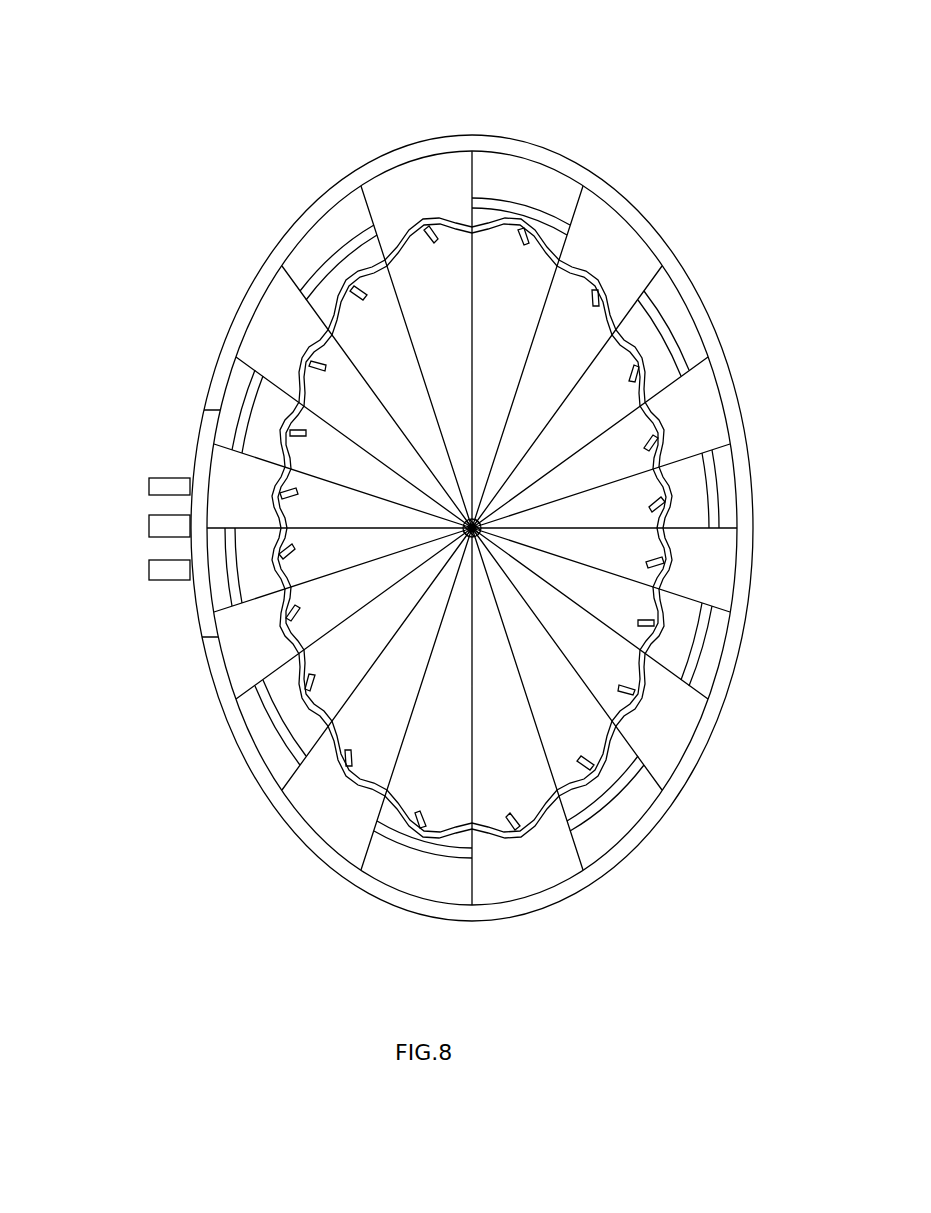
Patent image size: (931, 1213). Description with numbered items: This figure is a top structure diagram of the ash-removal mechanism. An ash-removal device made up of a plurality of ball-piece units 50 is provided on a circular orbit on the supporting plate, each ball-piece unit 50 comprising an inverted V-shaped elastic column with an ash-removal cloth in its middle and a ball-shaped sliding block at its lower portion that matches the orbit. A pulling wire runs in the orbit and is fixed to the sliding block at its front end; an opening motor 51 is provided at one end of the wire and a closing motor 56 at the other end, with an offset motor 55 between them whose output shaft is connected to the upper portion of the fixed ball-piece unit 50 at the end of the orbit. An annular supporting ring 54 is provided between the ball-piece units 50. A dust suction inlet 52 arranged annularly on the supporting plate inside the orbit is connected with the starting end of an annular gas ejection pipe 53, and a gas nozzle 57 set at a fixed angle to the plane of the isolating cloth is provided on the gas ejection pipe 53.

The ball-piece unit 50 is at (398, 196).
The opening motor 51 is at (172, 487).
The dust suction inlet 52 is at (483, 203).
The annular gas ejection pipe 53 is at (490, 517).
The annular supporting ring 54 is at (478, 515).
The offset motor 55 is at (163, 526).
The closing motor 56 is at (170, 570).
The gas nozzle 57 is at (567, 743).